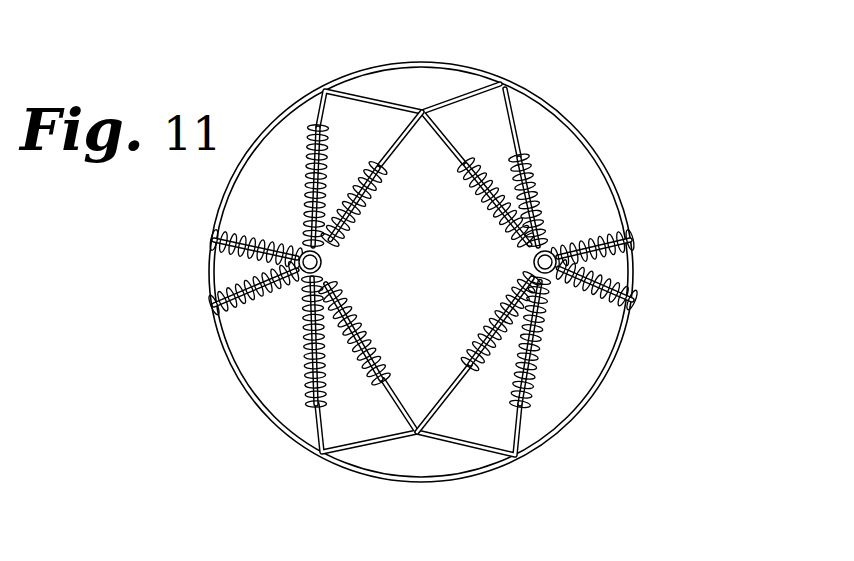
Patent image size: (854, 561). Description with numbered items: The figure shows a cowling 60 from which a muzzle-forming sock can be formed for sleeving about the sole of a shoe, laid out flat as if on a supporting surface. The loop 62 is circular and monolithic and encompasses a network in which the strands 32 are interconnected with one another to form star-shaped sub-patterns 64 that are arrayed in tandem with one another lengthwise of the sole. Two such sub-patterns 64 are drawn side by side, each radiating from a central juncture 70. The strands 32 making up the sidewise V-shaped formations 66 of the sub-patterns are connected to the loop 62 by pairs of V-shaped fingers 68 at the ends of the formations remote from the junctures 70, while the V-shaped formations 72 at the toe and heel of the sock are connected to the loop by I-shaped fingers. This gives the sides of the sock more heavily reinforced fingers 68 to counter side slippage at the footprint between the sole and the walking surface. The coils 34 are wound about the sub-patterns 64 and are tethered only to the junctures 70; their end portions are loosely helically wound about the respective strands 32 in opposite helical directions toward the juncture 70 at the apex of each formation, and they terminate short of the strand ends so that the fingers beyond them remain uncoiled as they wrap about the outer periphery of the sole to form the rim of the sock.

The cowling 60 is at (616, 160).
The loop 62 is at (599, 393).
The star-shaped sub-patterns 64 is at (282, 226).
The sidewise V-shaped formations 66 is at (530, 127).
The V-shaped fingers 68 is at (423, 108).
The junctures 70 is at (332, 263).
The V-shaped formations 72 is at (198, 238).
The strands 32 is at (388, 162).
The coils 34 is at (464, 360).